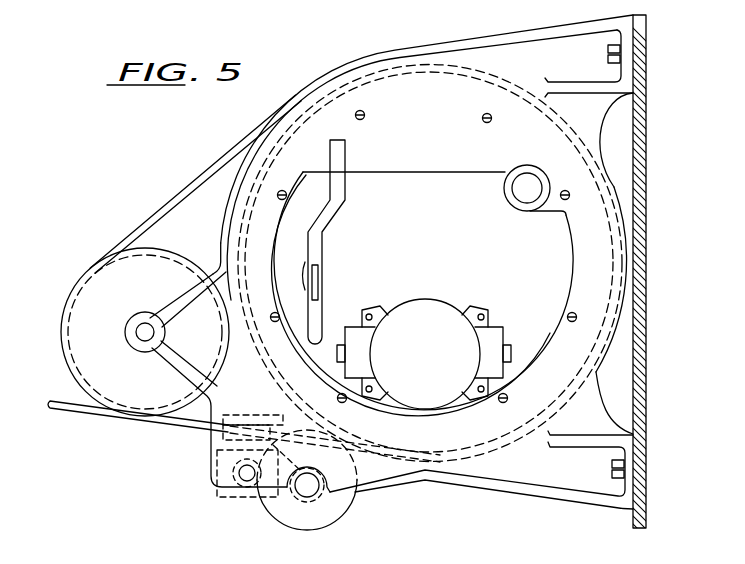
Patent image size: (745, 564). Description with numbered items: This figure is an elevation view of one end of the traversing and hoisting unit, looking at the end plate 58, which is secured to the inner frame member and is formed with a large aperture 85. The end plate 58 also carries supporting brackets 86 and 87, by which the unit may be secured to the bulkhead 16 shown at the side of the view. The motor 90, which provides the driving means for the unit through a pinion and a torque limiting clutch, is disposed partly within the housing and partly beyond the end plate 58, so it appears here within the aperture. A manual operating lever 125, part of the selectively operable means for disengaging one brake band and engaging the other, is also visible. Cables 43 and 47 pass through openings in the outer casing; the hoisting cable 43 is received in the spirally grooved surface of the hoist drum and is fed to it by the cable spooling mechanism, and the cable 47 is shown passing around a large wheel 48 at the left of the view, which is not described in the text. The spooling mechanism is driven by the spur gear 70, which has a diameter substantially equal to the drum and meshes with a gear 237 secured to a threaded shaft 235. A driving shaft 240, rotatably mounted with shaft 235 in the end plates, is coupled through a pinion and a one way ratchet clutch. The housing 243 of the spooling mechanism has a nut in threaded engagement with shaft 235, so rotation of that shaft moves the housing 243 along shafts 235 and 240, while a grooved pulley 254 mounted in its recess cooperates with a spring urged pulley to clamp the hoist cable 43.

The bulkhead 16 is at (644, 145).
The hoisting cable 43 is at (72, 407).
The cable 47 is at (165, 210).
The pulley 48 is at (85, 305).
The end plate 58 is at (343, 93).
The spur gear 70 is at (300, 423).
The large aperture 85 is at (564, 249).
The supporting bracket 86 is at (622, 44).
The supporting bracket 87 is at (600, 492).
The motor 90 is at (452, 320).
The manual operating lever 125 is at (322, 228).
The threaded shaft 235 is at (302, 498).
The gear 237 is at (353, 498).
The driving shaft 240 is at (250, 490).
The housing 243 is at (217, 472).
The grooved pulley 254 is at (253, 420).